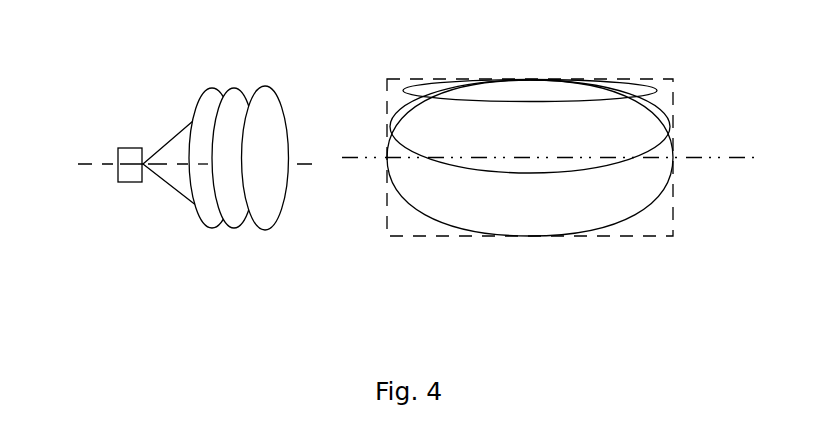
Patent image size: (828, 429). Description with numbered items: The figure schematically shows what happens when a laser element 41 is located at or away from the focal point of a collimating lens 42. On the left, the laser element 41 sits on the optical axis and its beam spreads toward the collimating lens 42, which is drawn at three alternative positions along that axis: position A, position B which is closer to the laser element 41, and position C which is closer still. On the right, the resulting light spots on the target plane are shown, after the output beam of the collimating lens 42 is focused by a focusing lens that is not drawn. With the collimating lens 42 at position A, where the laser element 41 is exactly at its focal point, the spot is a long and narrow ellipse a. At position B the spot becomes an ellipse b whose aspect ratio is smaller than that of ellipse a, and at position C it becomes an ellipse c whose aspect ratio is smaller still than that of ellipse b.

The laser element 41 is at (119, 148).
The collimating lens 42 is at (239, 166).
The position A is at (263, 77).
The position B is at (233, 77).
The position C is at (212, 77).
The ellipse a is at (650, 83).
The ellipse b is at (667, 107).
The ellipse c is at (650, 203).